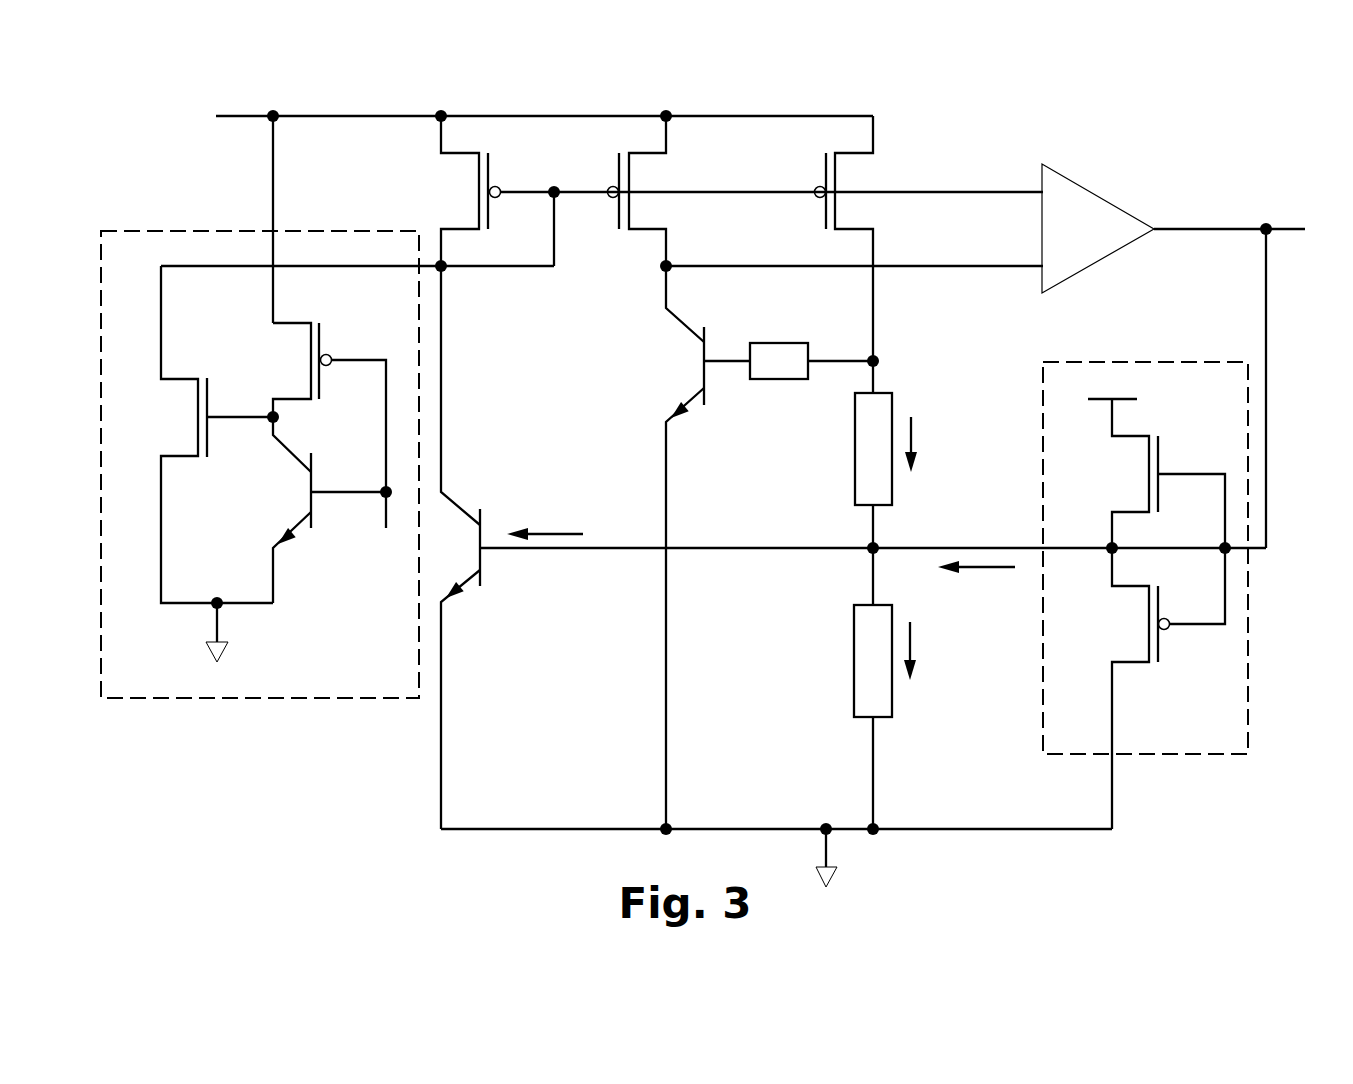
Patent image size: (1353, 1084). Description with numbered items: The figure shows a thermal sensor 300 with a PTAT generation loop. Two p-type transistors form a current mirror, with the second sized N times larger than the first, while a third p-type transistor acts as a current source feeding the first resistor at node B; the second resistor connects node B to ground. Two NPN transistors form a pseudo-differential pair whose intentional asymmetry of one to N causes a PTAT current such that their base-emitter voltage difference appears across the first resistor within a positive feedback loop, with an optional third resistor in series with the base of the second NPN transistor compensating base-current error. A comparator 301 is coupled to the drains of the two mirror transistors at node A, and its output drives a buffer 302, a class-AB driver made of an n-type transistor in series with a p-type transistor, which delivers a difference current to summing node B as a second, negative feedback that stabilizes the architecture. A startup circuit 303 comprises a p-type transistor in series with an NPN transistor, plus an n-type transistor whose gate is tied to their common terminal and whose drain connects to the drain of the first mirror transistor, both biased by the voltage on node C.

The thermal sensor 300 is at (1208, 129).
The comparator 301 is at (1098, 228).
The buffer 302 is at (1145, 595).
The startup circuit 303 is at (260, 464).